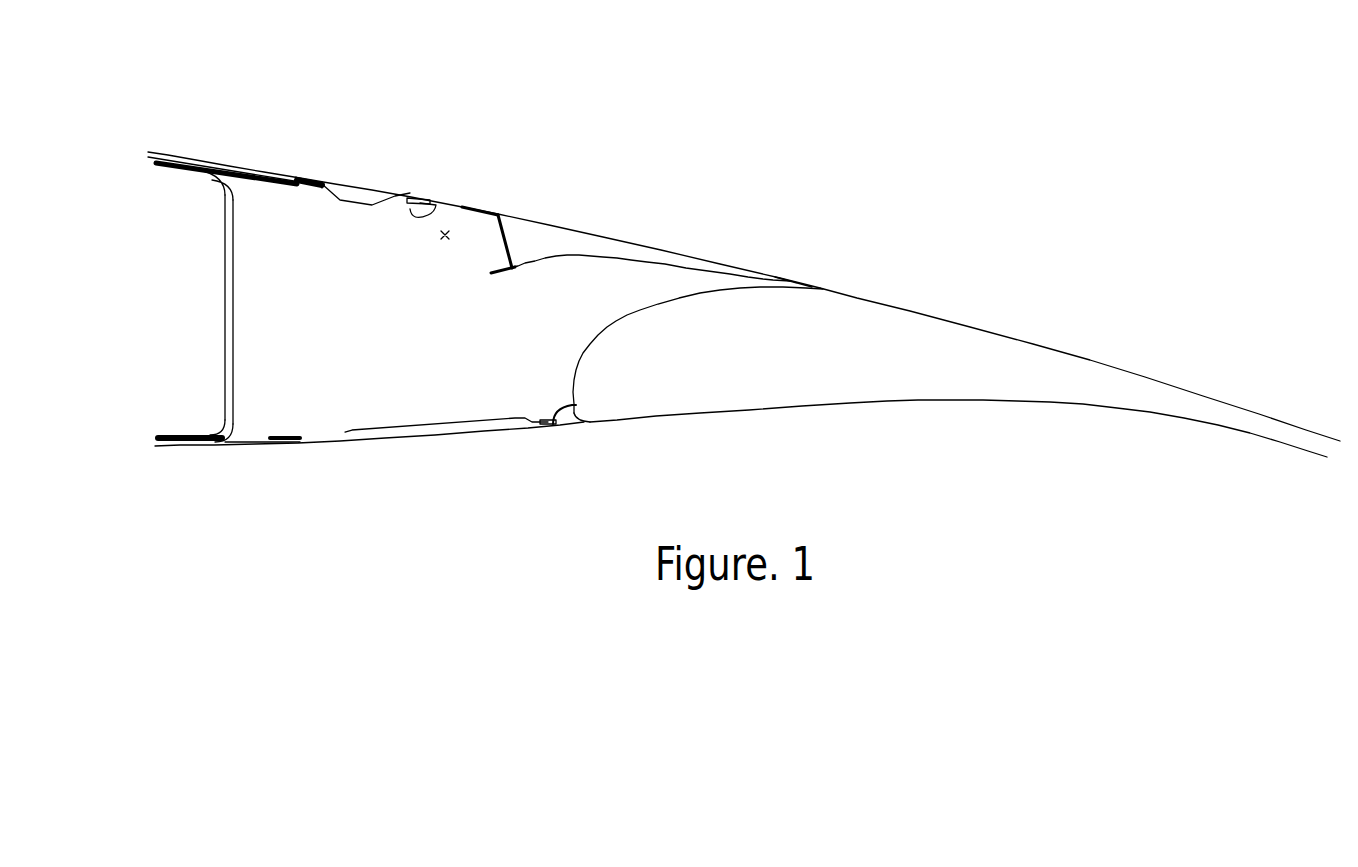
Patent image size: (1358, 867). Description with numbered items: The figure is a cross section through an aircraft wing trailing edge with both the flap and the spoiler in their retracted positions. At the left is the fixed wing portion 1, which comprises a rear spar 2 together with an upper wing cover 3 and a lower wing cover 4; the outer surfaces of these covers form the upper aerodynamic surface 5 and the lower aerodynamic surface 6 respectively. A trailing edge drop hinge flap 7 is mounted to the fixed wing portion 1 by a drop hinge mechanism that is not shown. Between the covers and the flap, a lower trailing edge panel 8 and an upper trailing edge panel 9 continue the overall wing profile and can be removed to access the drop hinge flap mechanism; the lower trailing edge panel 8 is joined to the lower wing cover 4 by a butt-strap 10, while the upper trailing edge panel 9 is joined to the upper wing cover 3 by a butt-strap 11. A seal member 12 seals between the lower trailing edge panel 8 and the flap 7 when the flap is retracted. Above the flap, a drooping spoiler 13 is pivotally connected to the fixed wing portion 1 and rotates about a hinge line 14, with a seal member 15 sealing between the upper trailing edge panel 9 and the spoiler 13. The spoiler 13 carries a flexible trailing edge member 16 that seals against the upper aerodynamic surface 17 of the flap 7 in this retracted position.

The fixed wing portion 1 is at (300, 73).
The rear spar 2 is at (234, 300).
The upper wing cover 3 is at (250, 169).
The lower wing cover 4 is at (248, 447).
The upper aerodynamic surface 5 is at (184, 154).
The lower aerodynamic surface 6 is at (183, 448).
The trailing edge drop hinge flap 7 is at (956, 326).
The lower trailing edge panel 8 is at (438, 431).
The upper trailing edge panel 9 is at (371, 191).
The butt-strap 10 is at (296, 433).
The butt-strap 11 is at (302, 179).
The seal member 12 is at (555, 426).
The drooping spoiler 13 is at (570, 241).
The hinge line 14 is at (443, 243).
The seal member 15 is at (431, 196).
The flexible trailing edge member 16 is at (815, 286).
The upper aerodynamic surface 17 is at (1080, 354).